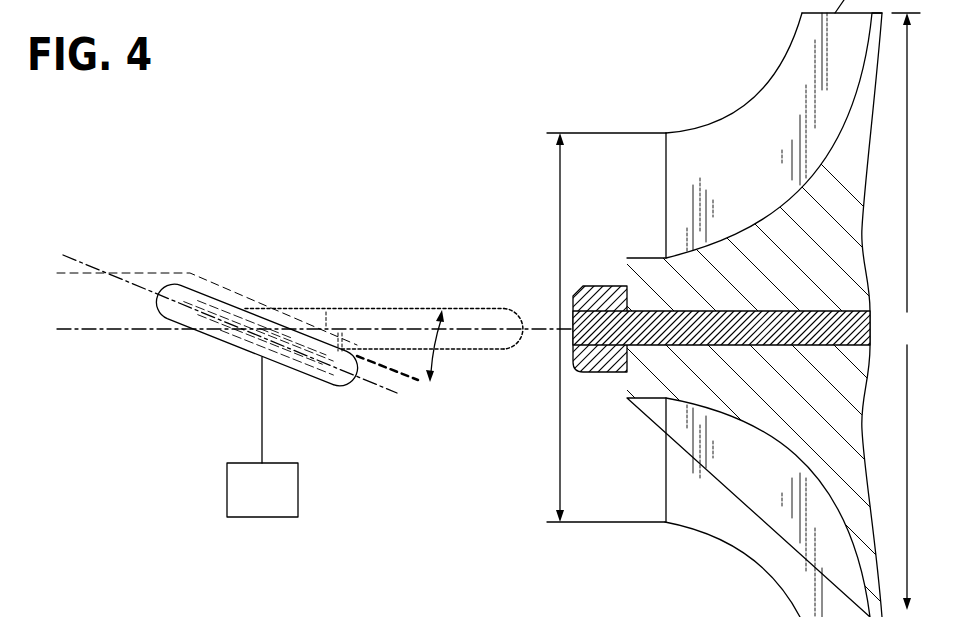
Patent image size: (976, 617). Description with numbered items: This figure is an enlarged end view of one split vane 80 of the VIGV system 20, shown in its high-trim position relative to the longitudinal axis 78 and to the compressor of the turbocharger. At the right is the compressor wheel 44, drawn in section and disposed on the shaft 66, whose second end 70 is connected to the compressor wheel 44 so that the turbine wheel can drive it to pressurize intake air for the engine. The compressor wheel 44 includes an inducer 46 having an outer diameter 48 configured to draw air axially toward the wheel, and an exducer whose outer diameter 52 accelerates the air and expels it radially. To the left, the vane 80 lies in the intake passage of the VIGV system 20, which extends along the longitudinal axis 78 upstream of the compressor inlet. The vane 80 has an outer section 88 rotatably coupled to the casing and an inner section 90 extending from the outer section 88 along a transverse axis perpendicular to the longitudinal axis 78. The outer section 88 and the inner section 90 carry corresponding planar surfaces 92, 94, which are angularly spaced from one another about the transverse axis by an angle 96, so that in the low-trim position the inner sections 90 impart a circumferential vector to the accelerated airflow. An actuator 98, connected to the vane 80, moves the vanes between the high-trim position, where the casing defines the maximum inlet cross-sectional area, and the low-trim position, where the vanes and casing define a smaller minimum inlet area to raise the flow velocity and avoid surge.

The VIGV system 20 is at (219, 158).
The compressor wheel 44 is at (659, 123).
The inducer 46 is at (667, 133).
The outer diameter 48 is at (560, 212).
The outer diameter 52 is at (907, 311).
The shaft 66 is at (835, 311).
The second end 70 is at (573, 343).
The longitudinal axis 78 is at (87, 328).
The split vane 80 is at (224, 344).
The outer section 88 is at (510, 340).
The inner section 90 is at (328, 374).
The planar surface 92 is at (352, 308).
The planar surface 94 is at (221, 296).
The angle 96 is at (440, 355).
The actuator 98 is at (298, 487).